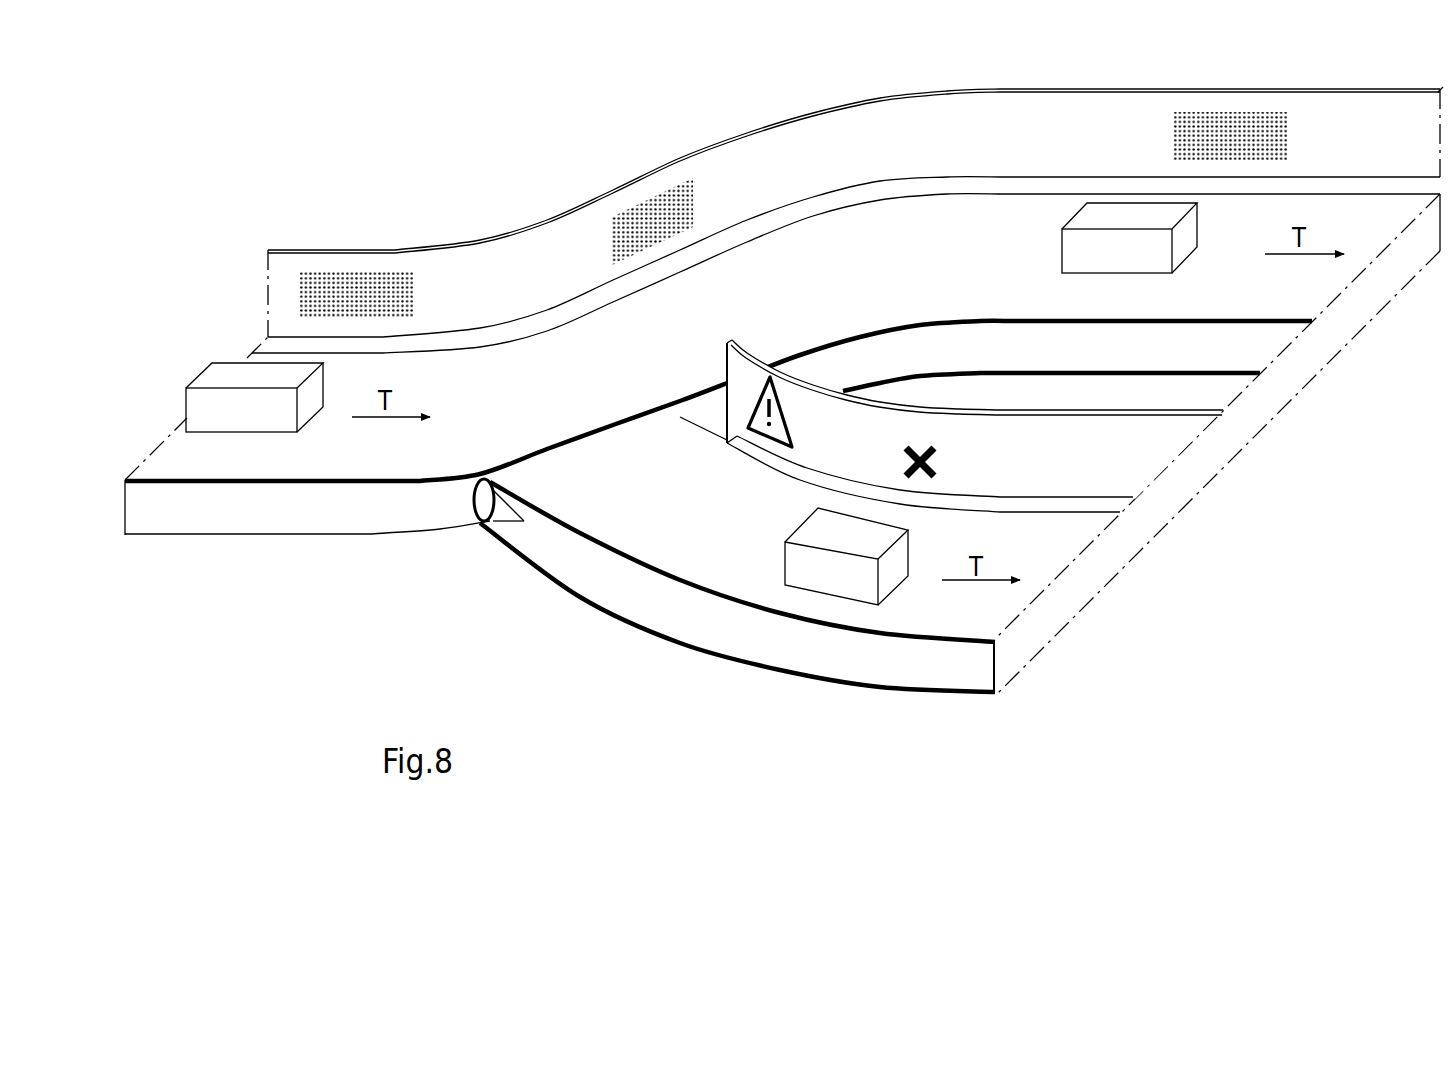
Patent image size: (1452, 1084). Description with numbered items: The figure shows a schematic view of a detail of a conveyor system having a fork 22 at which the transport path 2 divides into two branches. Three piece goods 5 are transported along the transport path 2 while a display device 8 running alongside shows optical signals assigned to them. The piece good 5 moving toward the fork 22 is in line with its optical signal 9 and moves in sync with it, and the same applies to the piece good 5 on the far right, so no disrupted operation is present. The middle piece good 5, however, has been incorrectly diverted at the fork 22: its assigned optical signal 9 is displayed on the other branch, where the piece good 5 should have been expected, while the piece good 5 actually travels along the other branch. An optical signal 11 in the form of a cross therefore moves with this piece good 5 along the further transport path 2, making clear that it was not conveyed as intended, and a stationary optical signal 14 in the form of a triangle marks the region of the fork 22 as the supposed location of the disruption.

The transport path 2 is at (563, 400).
The piece good 5 is at (195, 396).
The display device 8 is at (515, 237).
The optical signal 9 is at (434, 294).
The optical signal 11 is at (957, 459).
The optical signal 14 is at (799, 427).
The fork 22 is at (418, 595).